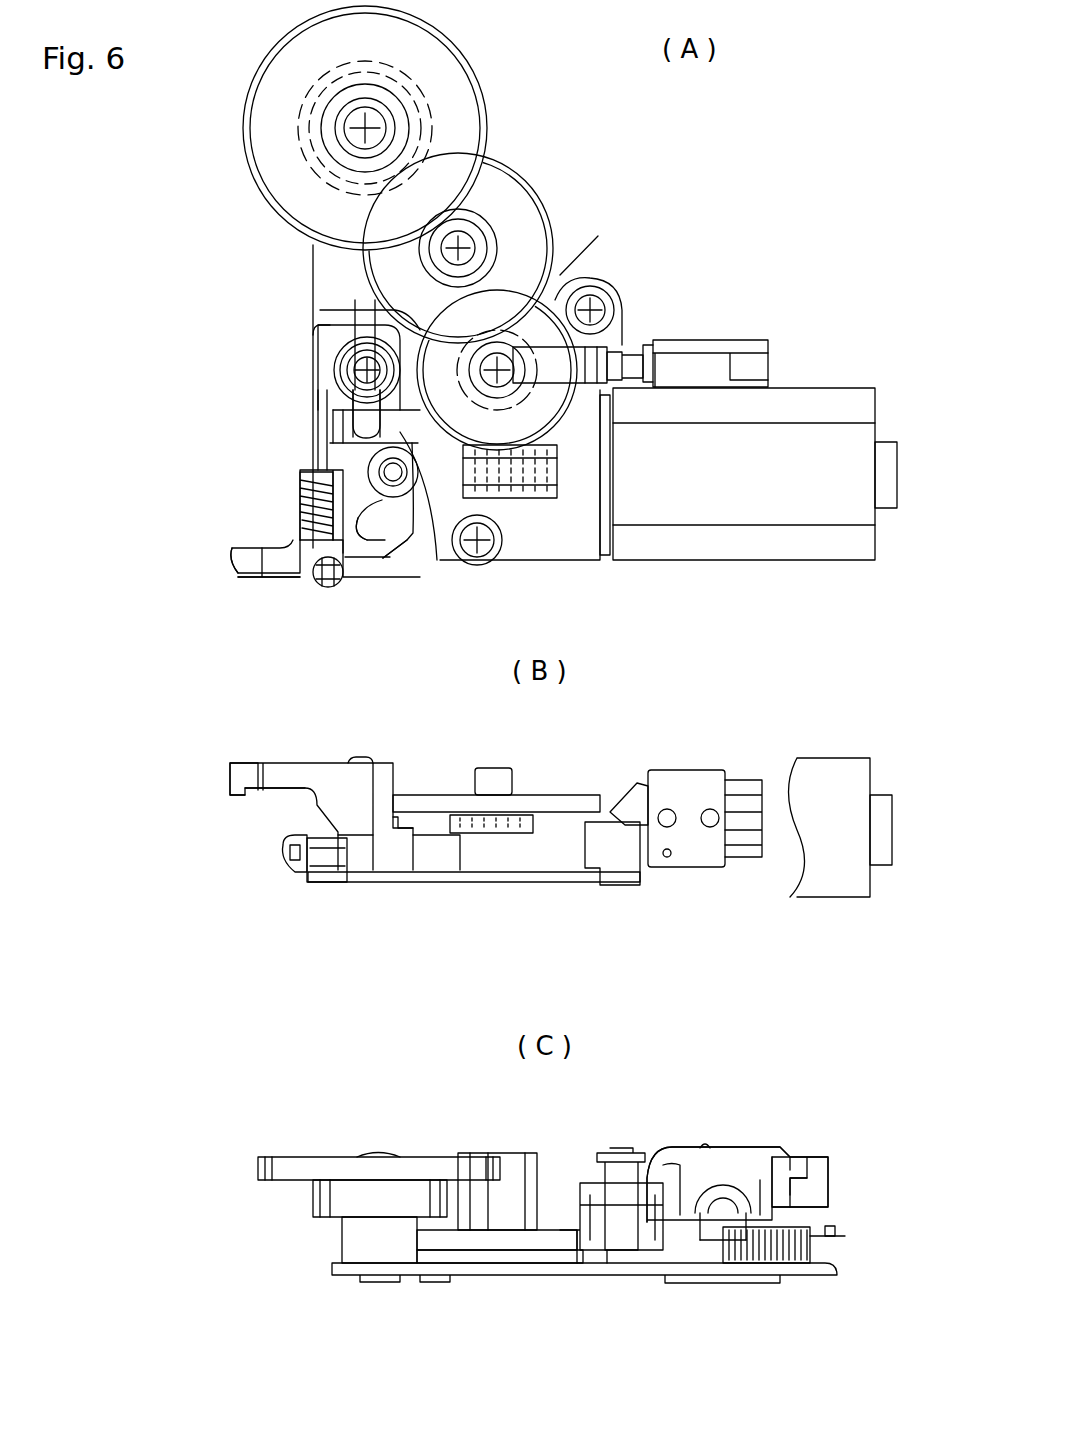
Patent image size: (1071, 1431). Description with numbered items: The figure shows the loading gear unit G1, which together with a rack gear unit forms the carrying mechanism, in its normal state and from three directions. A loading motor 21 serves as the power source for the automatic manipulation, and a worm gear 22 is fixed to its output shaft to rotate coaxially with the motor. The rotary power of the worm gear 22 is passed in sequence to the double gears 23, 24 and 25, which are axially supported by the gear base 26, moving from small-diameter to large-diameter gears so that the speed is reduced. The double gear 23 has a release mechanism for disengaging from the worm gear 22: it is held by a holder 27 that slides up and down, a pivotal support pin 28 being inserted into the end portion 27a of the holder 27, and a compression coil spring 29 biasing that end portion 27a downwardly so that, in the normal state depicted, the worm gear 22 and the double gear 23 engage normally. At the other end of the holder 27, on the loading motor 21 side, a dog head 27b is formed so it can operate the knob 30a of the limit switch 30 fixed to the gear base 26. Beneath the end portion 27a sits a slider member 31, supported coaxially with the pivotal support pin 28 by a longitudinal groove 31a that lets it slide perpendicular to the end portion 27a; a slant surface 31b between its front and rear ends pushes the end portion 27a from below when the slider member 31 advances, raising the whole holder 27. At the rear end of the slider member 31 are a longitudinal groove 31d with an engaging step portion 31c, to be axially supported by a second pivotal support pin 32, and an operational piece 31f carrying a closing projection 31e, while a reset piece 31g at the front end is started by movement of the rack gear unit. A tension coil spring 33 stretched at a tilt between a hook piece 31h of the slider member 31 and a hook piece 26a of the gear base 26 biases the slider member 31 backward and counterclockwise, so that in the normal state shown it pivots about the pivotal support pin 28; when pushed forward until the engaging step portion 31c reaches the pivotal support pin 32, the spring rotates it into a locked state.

The loading motor 21 is at (800, 440).
The worm gear 22 is at (548, 505).
The double gear 23 is at (540, 330).
The double gear 24 is at (510, 188).
The double gear 25 is at (478, 92).
The gear base 26 is at (305, 270).
The hook piece 26a is at (325, 590).
The holder 27 is at (318, 312).
The end portion 27a is at (333, 368).
The dog head 27b is at (618, 348).
The pivotal support pin 28 is at (350, 400).
The compression coil spring 29 is at (600, 1175).
The limit switch 30 is at (705, 360).
The knob 30a is at (640, 388).
The slider member 31 is at (392, 590).
The longitudinal groove 31a is at (340, 430).
The slant surface 31b is at (405, 490).
The engaging step portion 31c is at (368, 555).
The longitudinal groove 31d is at (386, 555).
The closing projection 31e is at (255, 568).
The operational piece 31f is at (290, 575).
The reset piece 31g is at (318, 335).
The hook piece 31h is at (296, 470).
The pivotal support pin 32 is at (405, 520).
The tension coil spring 33 is at (298, 505).
The loading gear unit G1 is at (688, 212).